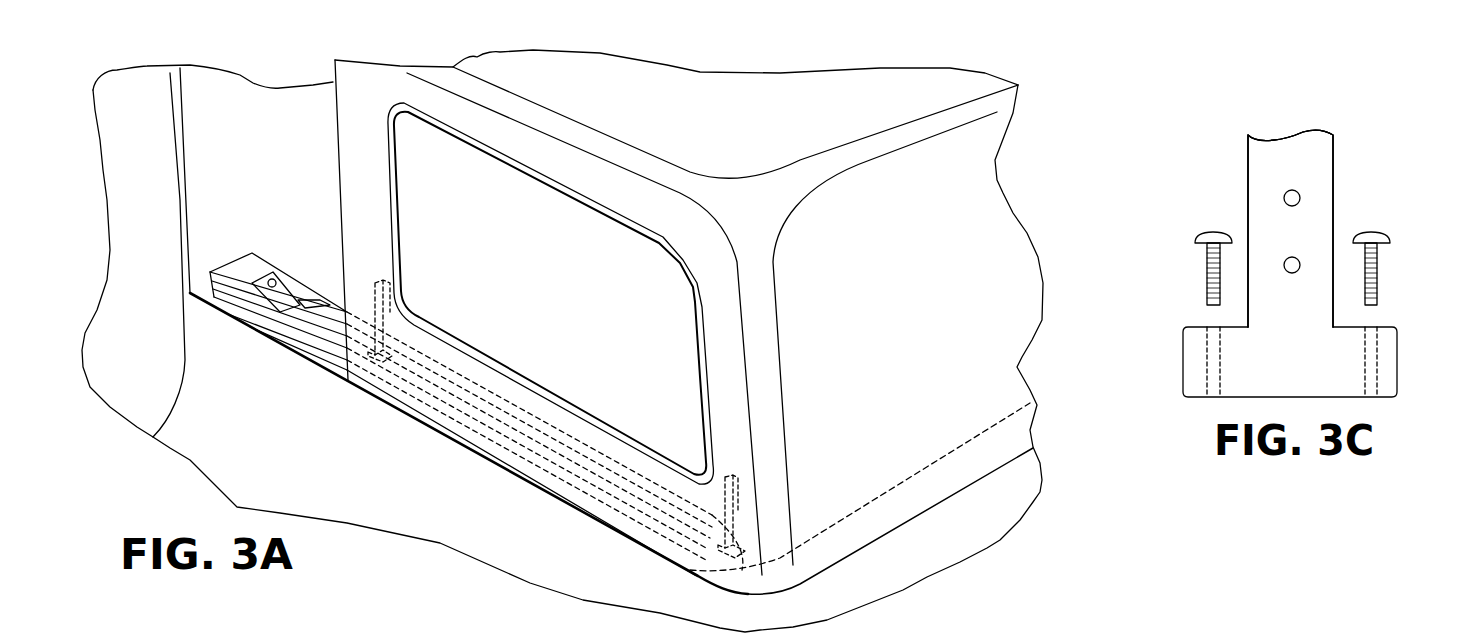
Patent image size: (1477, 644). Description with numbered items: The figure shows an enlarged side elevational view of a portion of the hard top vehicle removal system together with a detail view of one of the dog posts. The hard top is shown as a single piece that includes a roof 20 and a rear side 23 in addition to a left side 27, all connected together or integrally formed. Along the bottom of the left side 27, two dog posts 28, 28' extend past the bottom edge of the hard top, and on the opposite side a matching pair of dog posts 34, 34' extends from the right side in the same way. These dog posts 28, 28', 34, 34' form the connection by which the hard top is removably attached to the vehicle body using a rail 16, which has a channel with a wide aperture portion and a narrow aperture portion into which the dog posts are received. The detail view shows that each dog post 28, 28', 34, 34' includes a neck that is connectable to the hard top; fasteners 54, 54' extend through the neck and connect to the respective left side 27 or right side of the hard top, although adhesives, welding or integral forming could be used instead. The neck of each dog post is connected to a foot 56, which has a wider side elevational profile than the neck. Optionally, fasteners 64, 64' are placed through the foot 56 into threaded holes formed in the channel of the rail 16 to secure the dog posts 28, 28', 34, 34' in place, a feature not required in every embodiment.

In FIG. 3A, the rail 16 is at (252, 267).
In FIG. 3A, the roof 20 is at (778, 134).
In FIG. 3A, the rear side 23 is at (905, 190).
In FIG. 3A, the left side 27 is at (620, 188).
In FIG. 3A, the dog post 28 is at (545, 415).
In FIG. 3C, the dog post 28 is at (1348, 188).
In FIG. 3A, the dog post 28' is at (786, 509).
In FIG. 3C, the dog post 34 is at (1348, 188).
In FIG. 3C, the dog post 34' is at (1348, 188).
In FIG. 3C, the fastener 54 is at (1251, 229).
In FIG. 3C, the fastener 54' is at (1336, 177).
In FIG. 3C, the foot 56 is at (1183, 355).
In FIG. 3C, the fastener 64 is at (1397, 249).
In FIG. 3C, the fastener 64' is at (1191, 241).